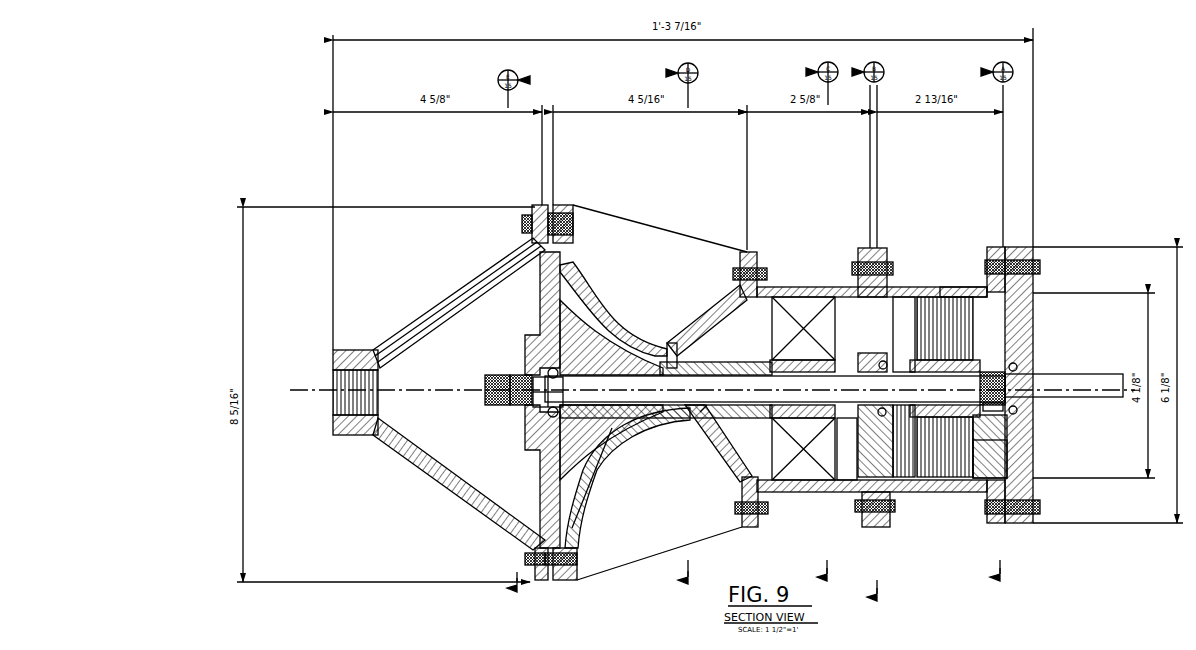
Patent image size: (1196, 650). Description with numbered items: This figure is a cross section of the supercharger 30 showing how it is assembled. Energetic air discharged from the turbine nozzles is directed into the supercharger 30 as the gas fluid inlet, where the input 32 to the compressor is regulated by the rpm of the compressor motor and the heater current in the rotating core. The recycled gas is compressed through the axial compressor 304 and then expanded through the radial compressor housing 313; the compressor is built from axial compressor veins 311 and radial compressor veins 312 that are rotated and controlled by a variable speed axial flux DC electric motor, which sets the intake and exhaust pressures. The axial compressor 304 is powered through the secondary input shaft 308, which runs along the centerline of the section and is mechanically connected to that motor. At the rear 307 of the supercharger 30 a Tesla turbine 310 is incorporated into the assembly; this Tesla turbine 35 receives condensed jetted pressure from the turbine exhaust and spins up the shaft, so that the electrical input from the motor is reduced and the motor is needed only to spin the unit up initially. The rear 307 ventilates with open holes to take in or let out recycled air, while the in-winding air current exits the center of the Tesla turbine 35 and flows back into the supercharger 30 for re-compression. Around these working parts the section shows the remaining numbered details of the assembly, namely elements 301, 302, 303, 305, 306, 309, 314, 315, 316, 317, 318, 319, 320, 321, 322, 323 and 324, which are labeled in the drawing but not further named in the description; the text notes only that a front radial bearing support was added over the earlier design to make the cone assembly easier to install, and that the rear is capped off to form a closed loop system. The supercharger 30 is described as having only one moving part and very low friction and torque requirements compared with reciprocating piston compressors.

The supercharger 30 is at (312, 136).
The input 32 is at (960, 282).
The Tesla turbine 35 is at (977, 445).
The inlet cone 301 is at (462, 288).
The impeller hub 302 is at (538, 300).
The pump casing 303 is at (660, 226).
The axial compressor 304 is at (808, 341).
The seal 305 is at (923, 265).
The spring 306 is at (956, 292).
The rear 307 is at (1040, 385).
The secondary input shaft 308 is at (834, 368).
The O-ring 309 is at (548, 372).
The Tesla turbine 310 is at (984, 488).
The axial compressor veins 311 is at (835, 486).
The radial compressor veins 312 is at (618, 509).
The radial compressor housing 313 is at (919, 432).
The seal 314 is at (880, 486).
The diffuser wall 315 is at (725, 487).
The spring 316 is at (945, 473).
The key 317 is at (525, 410).
The lock nut 318 is at (1033, 419).
The lock washer 319 is at (1048, 434).
The nut 320 is at (421, 391).
The washer 321 is at (483, 376).
The bolt 322 is at (601, 373).
The gland 323 is at (892, 338).
The housing 324 is at (872, 339).